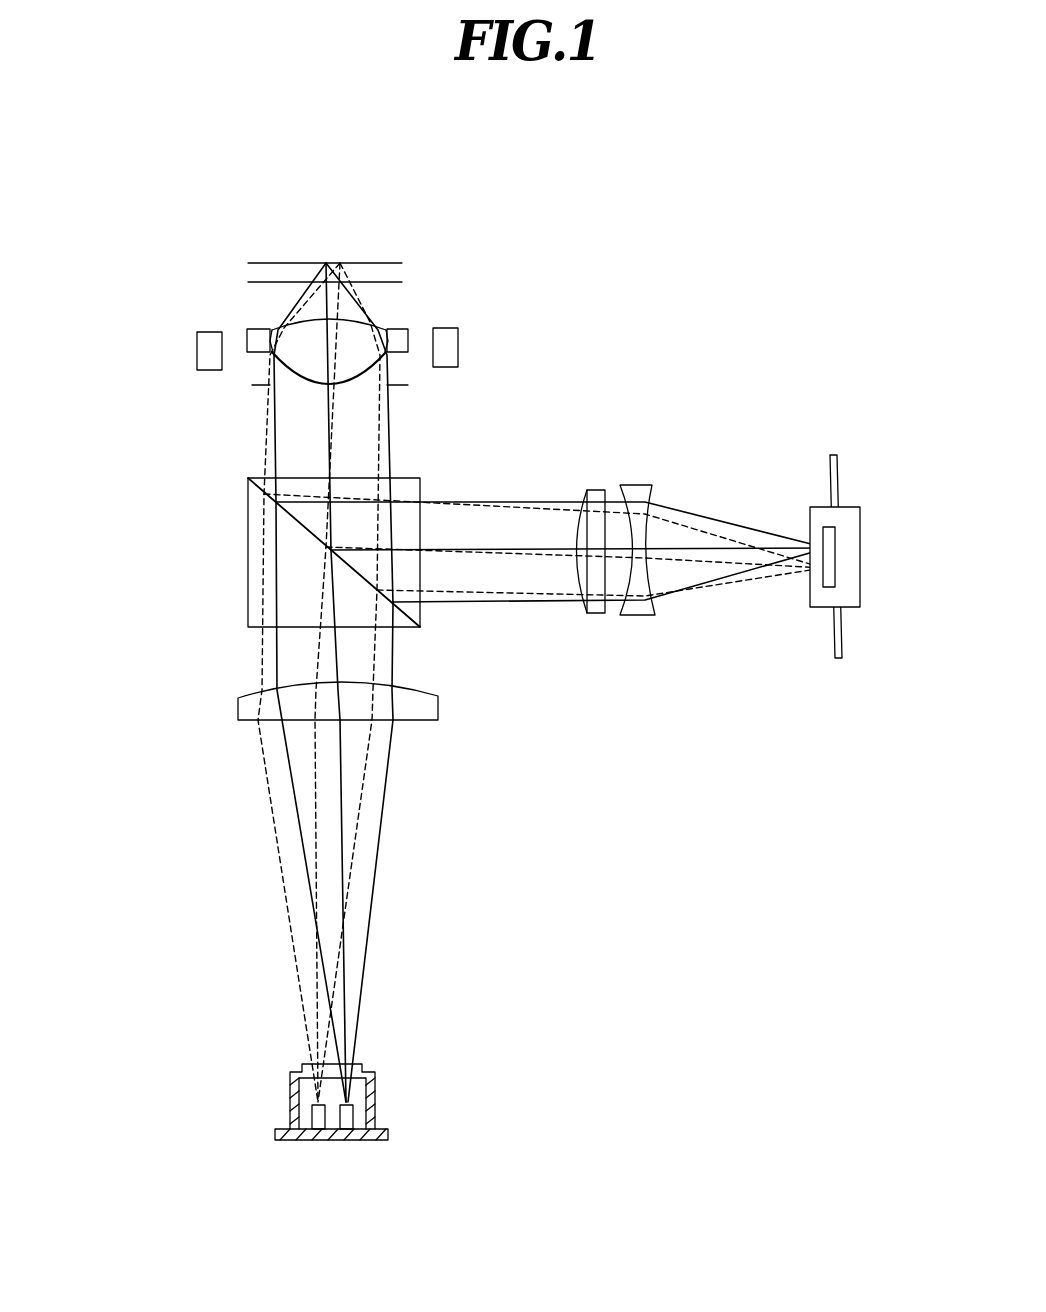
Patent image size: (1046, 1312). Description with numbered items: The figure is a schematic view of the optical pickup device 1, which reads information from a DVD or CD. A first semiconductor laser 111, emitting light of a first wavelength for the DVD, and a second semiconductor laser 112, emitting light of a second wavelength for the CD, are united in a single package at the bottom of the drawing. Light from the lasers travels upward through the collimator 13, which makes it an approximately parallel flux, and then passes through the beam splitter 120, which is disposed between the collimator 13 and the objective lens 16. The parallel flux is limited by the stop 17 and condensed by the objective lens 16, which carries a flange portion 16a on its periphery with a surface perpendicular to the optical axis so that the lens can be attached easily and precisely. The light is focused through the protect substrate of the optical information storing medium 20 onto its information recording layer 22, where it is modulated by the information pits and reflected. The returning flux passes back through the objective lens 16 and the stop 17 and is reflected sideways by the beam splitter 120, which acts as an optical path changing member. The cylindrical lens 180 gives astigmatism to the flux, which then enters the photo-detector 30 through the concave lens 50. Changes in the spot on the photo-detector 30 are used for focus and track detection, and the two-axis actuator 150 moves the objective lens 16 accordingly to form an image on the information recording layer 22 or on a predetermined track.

The optical pickup device 1 is at (485, 918).
The collimator 13 is at (240, 713).
The objective lens 16 is at (253, 322).
The flange portion 16a is at (402, 328).
The stop 17 is at (257, 388).
The optical information storing medium 20 is at (260, 247).
The information recording layer 22 is at (303, 263).
The photo-detector 30 is at (863, 552).
The concave lens 50 is at (640, 493).
The first semiconductor laser 111 is at (360, 1140).
The second semiconductor laser 112 is at (322, 1140).
The beam splitter 120 is at (248, 565).
The two-axis actuator 150 is at (450, 347).
The cylindrical lens 180 is at (587, 490).